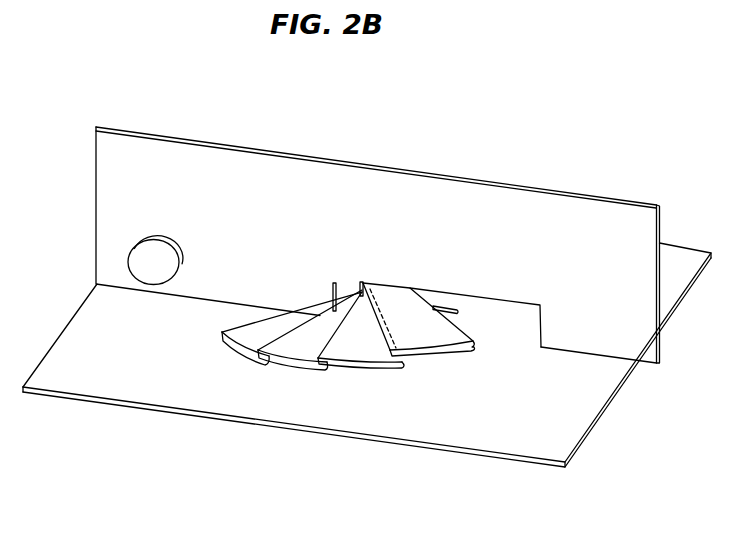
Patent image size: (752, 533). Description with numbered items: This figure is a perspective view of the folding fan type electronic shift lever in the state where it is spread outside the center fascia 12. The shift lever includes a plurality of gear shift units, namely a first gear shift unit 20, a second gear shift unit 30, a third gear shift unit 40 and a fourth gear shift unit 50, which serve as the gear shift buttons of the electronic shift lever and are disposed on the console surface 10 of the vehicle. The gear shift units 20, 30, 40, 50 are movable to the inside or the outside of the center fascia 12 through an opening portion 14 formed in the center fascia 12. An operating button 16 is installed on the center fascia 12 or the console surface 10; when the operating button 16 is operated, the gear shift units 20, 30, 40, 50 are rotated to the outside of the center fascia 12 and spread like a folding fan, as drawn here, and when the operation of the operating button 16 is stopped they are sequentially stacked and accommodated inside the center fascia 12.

The console surface 10 is at (117, 373).
The center fascia 12 is at (203, 175).
The opening portion 14 is at (502, 325).
The operating button 16 is at (150, 258).
The first gear shift unit 20 is at (432, 337).
The second gear shift unit 30 is at (363, 348).
The third gear shift unit 40 is at (303, 348).
The fourth gear shift unit 50 is at (250, 340).